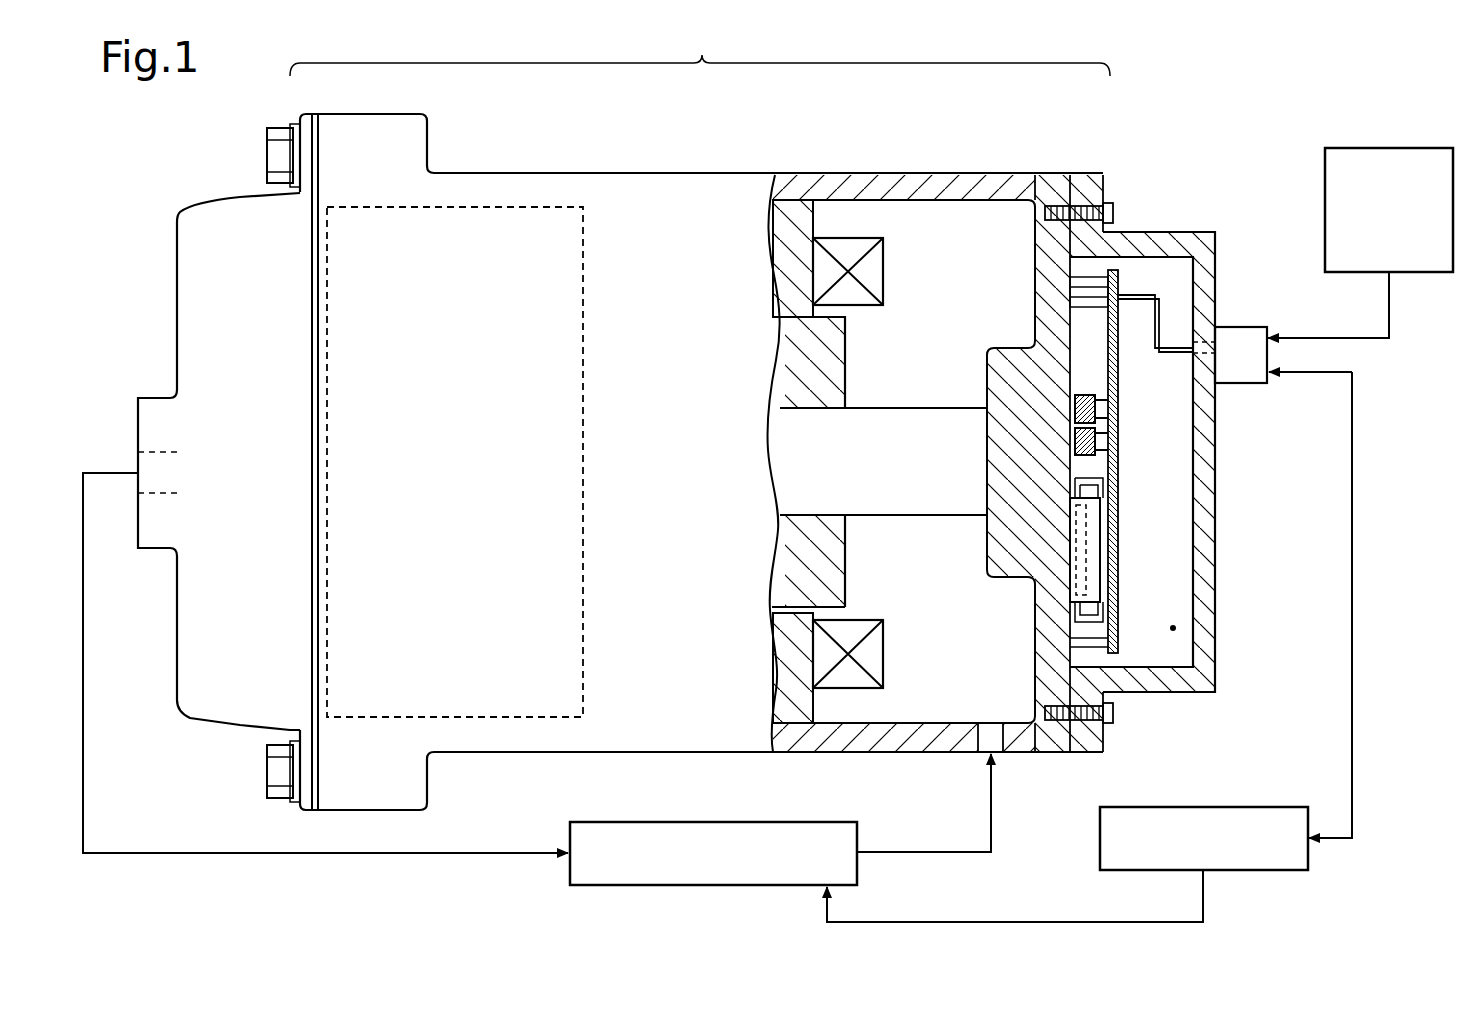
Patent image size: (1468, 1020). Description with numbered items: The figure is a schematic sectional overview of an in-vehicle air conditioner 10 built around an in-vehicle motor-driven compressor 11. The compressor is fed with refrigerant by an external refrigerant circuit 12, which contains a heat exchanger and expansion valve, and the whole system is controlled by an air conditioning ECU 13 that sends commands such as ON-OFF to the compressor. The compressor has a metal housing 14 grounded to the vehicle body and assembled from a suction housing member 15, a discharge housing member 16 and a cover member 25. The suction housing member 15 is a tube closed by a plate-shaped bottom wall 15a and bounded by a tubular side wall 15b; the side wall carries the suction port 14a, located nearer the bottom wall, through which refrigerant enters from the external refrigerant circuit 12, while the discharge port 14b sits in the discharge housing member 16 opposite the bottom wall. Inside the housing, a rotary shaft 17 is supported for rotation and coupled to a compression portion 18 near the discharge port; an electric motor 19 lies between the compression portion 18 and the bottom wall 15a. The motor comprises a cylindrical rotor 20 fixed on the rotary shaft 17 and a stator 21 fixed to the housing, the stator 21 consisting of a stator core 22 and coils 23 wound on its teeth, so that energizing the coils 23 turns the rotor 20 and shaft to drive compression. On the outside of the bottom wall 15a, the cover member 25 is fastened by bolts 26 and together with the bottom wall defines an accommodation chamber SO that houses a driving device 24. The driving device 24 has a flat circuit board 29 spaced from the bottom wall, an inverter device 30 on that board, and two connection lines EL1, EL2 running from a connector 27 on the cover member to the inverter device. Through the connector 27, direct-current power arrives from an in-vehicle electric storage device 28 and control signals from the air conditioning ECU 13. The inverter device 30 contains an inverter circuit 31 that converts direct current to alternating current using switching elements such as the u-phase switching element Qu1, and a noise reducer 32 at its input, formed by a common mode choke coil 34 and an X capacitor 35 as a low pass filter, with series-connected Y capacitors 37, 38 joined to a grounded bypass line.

The in-vehicle air conditioner 10 is at (1270, 130).
The in-vehicle motor-driven compressor 11 is at (634, 172).
The external refrigerant circuit 12 is at (812, 822).
The air conditioning ECU 13 is at (1230, 807).
The housing 14 is at (635, 417).
The suction port 14a is at (992, 723).
The discharge port 14b is at (138, 452).
The suction housing member 15 is at (350, 114).
The bottom wall 15a is at (1035, 218).
The side wall 15b is at (906, 190).
The discharge housing member 16 is at (310, 114).
The rotary shaft 17 is at (780, 455).
The compression portion 18 is at (492, 207).
The electric motor 19 is at (808, 197).
The rotor 20 is at (790, 362).
The stator 21 is at (708, 227).
The stator core 22 is at (778, 246).
The coils 23 is at (824, 262).
The driving device 24 is at (1170, 280).
The cover member 25 is at (1086, 173).
The bolts 26 is at (1113, 212).
The connector 27 is at (1262, 327).
The in-vehicle electric storage device 28 is at (1402, 148).
The circuit board 29 is at (1118, 505).
The inverter device 30 is at (1066, 506).
The inverter circuit 31 is at (1076, 540).
The noise reducer 32 is at (1066, 314).
The common mode choke coil 34 is at (1090, 380).
The X capacitor 35 is at (1100, 440).
The first Y capacitor 37 is at (1075, 412).
The second Y capacitor 38 is at (1010, 436).
The u-phase switching element Qu1 is at (1076, 580).
The accommodation chamber SO is at (1176, 628).
The connection line EL1 is at (1195, 362).
The connection line EL2 is at (1175, 340).